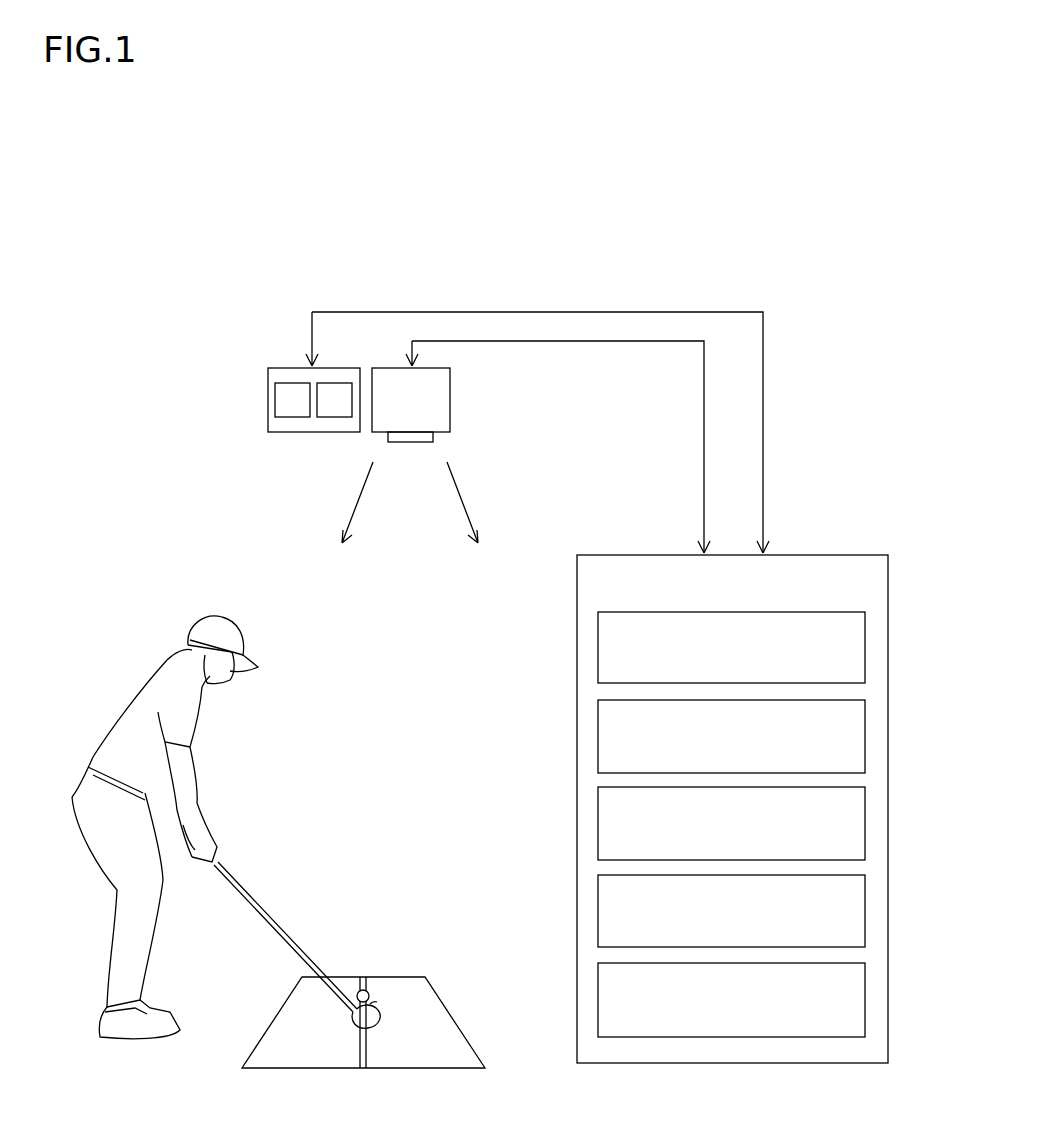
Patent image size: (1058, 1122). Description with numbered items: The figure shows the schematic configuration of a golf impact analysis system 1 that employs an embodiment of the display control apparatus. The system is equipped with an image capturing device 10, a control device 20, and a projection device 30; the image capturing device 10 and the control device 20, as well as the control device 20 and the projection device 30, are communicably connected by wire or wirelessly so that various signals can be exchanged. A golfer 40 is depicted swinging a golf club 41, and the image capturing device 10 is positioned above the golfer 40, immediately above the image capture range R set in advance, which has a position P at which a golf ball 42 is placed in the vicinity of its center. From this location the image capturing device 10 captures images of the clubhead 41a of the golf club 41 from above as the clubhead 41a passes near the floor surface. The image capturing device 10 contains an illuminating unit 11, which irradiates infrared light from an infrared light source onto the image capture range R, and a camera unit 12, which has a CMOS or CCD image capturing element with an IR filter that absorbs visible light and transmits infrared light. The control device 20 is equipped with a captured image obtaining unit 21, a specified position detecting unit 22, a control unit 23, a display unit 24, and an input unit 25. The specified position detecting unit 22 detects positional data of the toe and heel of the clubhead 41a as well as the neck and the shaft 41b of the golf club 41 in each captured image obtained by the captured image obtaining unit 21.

The golf impact analysis system 1 is at (213, 248).
The image capturing device 10 is at (269, 404).
The illuminating unit 11 is at (268, 396).
The camera unit 12 is at (337, 432).
The control device 20 is at (769, 776).
The captured image obtaining unit 21 is at (865, 648).
The specified position detecting unit 22 is at (865, 738).
The control unit 23 is at (865, 822).
The display unit 24 is at (865, 910).
The input unit 25 is at (865, 998).
The projection device 30 is at (450, 400).
The golfer 40 is at (215, 612).
The golf club 41 is at (286, 946).
The clubhead 41a is at (340, 1030).
The shaft 41b is at (270, 920).
The golf ball 42 is at (375, 975).
The position P is at (377, 1007).
The image capture range R is at (447, 1008).